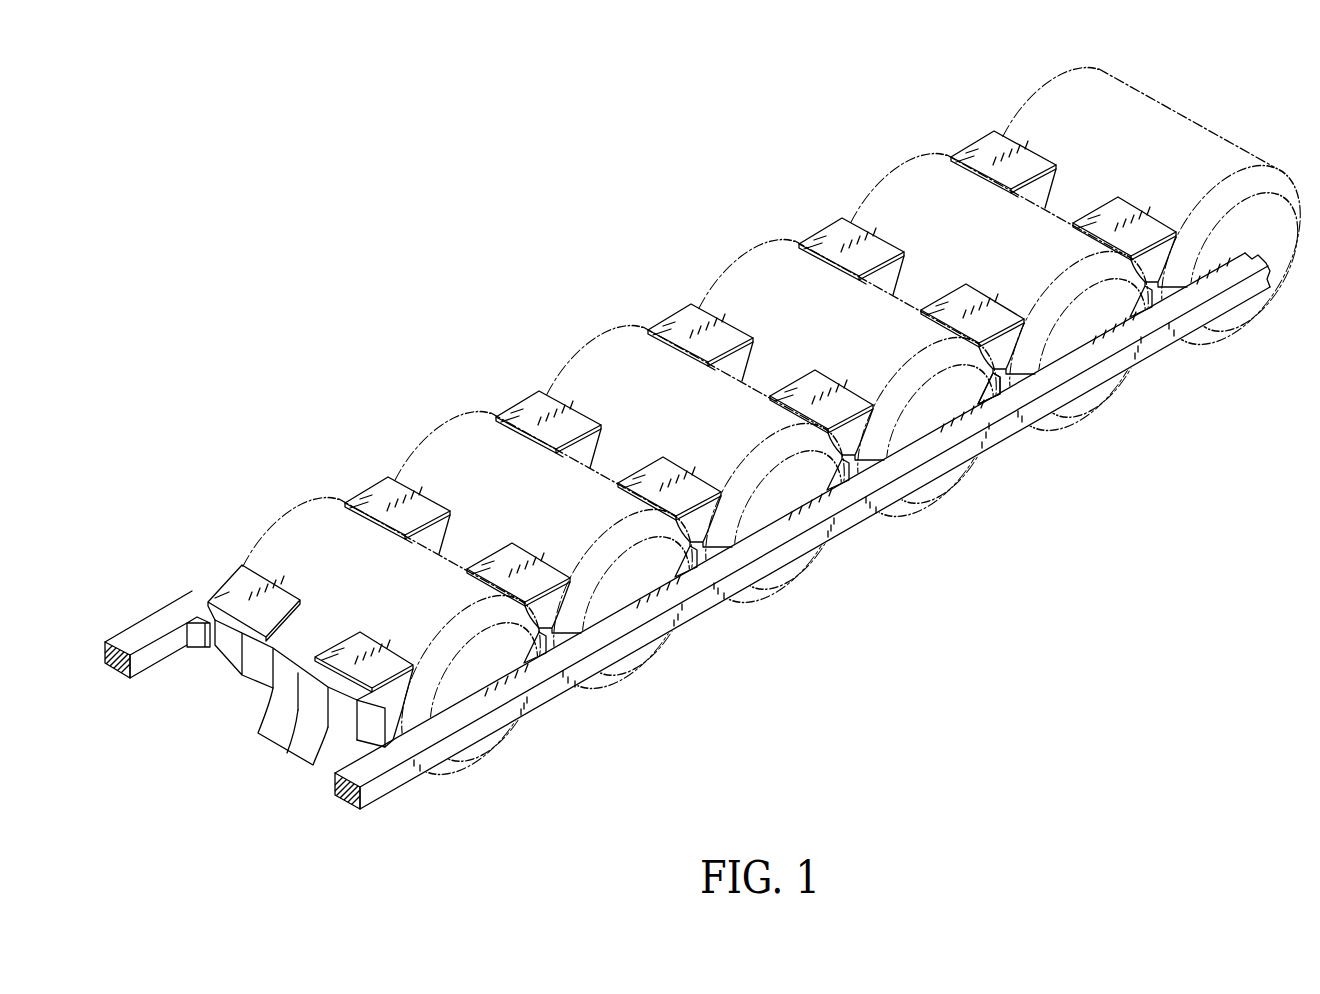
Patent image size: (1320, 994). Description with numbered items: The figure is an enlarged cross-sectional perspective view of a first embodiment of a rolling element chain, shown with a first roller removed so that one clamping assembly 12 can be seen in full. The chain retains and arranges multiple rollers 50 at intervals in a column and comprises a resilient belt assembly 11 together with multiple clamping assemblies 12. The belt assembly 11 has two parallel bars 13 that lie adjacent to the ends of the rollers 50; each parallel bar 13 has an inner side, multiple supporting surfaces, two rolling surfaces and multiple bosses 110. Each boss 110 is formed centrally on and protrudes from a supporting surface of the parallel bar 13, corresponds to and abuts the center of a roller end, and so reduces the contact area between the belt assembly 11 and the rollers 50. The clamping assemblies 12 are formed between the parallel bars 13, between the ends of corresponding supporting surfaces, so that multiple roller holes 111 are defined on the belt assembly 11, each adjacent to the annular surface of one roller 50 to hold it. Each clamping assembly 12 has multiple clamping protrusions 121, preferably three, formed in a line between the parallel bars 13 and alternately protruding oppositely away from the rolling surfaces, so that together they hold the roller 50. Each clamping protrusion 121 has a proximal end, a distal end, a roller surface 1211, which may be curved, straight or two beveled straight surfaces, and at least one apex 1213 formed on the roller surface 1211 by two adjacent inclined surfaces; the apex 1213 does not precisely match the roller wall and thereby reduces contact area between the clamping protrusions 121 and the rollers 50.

The belt assembly 11 is at (540, 672).
The parallel bar 13 is at (833, 500).
The boss 110 is at (135, 652).
The roller hole 111 is at (972, 396).
The clamping assembly 12 is at (272, 625).
The clamping protrusion 121 is at (220, 636).
The roller surface 1211 is at (247, 627).
The apex 1213 is at (219, 629).
The roller 50 is at (1202, 95).